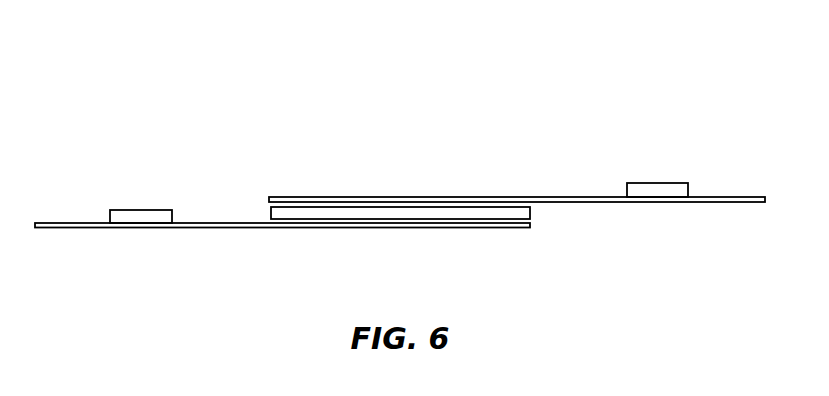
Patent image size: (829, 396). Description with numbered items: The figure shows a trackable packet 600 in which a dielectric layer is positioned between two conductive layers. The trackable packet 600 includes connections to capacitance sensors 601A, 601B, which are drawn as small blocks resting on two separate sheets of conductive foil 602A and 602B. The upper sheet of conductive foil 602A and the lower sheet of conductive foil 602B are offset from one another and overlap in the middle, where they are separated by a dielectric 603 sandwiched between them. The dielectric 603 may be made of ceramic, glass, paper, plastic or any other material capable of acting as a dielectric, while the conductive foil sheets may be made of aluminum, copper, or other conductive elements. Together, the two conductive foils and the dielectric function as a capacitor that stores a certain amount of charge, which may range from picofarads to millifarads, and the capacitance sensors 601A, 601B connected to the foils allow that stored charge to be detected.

The trackable packet 600 is at (100, 87).
The capacitance sensor 601A is at (140, 210).
The capacitance sensor 601B is at (657, 183).
The sheet of conductive foil 602A is at (410, 197).
The sheet of conductive foil 602B is at (410, 228).
The dielectric 603 is at (532, 212).